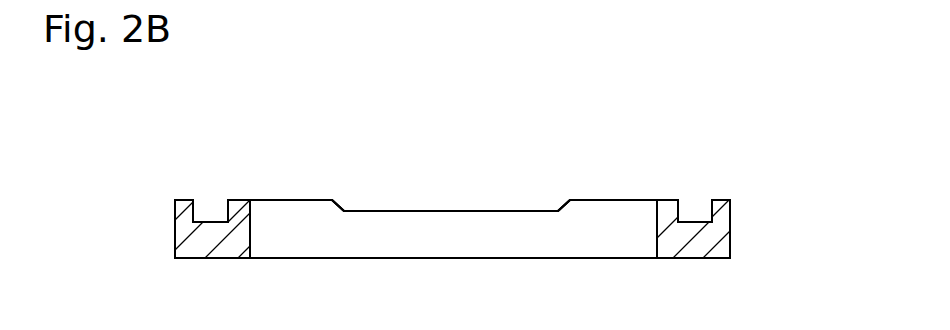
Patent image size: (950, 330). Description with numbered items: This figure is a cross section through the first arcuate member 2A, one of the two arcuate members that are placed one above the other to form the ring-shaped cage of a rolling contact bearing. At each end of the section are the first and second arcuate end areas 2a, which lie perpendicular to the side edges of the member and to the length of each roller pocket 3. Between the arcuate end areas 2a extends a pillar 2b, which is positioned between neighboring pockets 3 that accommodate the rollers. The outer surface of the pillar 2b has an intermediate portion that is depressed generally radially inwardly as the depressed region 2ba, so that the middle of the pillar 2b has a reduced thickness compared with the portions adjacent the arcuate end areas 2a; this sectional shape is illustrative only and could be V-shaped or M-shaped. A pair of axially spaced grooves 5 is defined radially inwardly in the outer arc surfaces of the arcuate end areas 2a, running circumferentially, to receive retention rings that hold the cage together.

The first arcuate member 2A is at (373, 143).
The arcuate end areas 2a is at (175, 230).
The pillars 2b is at (280, 200).
The depressed region 2ba is at (435, 211).
The roller pockets 3 is at (482, 220).
The grooves 5 is at (210, 222).